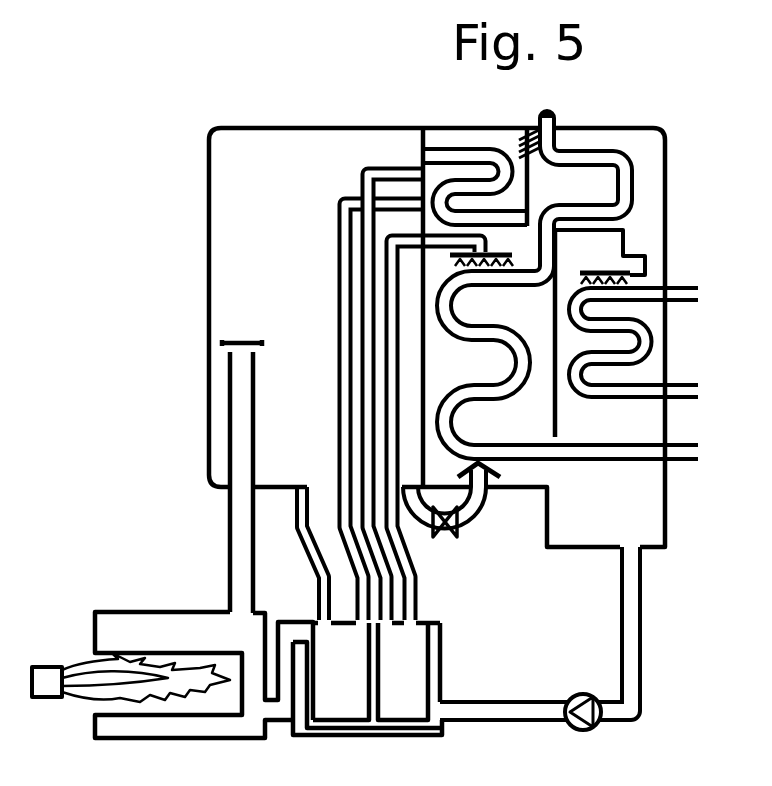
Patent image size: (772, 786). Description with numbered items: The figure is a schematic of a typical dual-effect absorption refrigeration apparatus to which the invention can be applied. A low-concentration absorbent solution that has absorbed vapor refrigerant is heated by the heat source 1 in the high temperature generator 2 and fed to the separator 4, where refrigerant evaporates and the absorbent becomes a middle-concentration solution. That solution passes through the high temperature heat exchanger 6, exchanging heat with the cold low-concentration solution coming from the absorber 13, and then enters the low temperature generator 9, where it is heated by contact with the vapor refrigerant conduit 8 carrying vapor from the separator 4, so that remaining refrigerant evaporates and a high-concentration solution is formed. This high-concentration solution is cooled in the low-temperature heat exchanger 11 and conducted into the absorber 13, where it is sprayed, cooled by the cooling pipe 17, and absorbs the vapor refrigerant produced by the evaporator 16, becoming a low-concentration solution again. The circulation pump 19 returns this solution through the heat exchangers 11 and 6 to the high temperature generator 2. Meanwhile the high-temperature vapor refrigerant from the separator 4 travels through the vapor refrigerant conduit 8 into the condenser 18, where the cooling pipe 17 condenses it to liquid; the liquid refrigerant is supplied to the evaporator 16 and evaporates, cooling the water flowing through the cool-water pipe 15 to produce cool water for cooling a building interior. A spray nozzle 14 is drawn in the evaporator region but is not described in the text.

The heat source 1 is at (47, 667).
The high temperature generator 2 is at (160, 612).
The separator 4 is at (262, 343).
The high temperature heat exchanger 6 is at (340, 700).
The vapor refrigerant conduit 8 is at (497, 143).
The low temperature generator 9 is at (447, 160).
The low-temperature heat exchanger 11 is at (405, 705).
The absorber 13 is at (466, 360).
The spray nozzle 14 is at (608, 262).
The cool-water pipe 15 is at (613, 396).
The evaporator 16 is at (655, 318).
The cooling pipe 17 is at (635, 163).
The condenser 18 is at (597, 143).
The circulation pump 19 is at (572, 726).